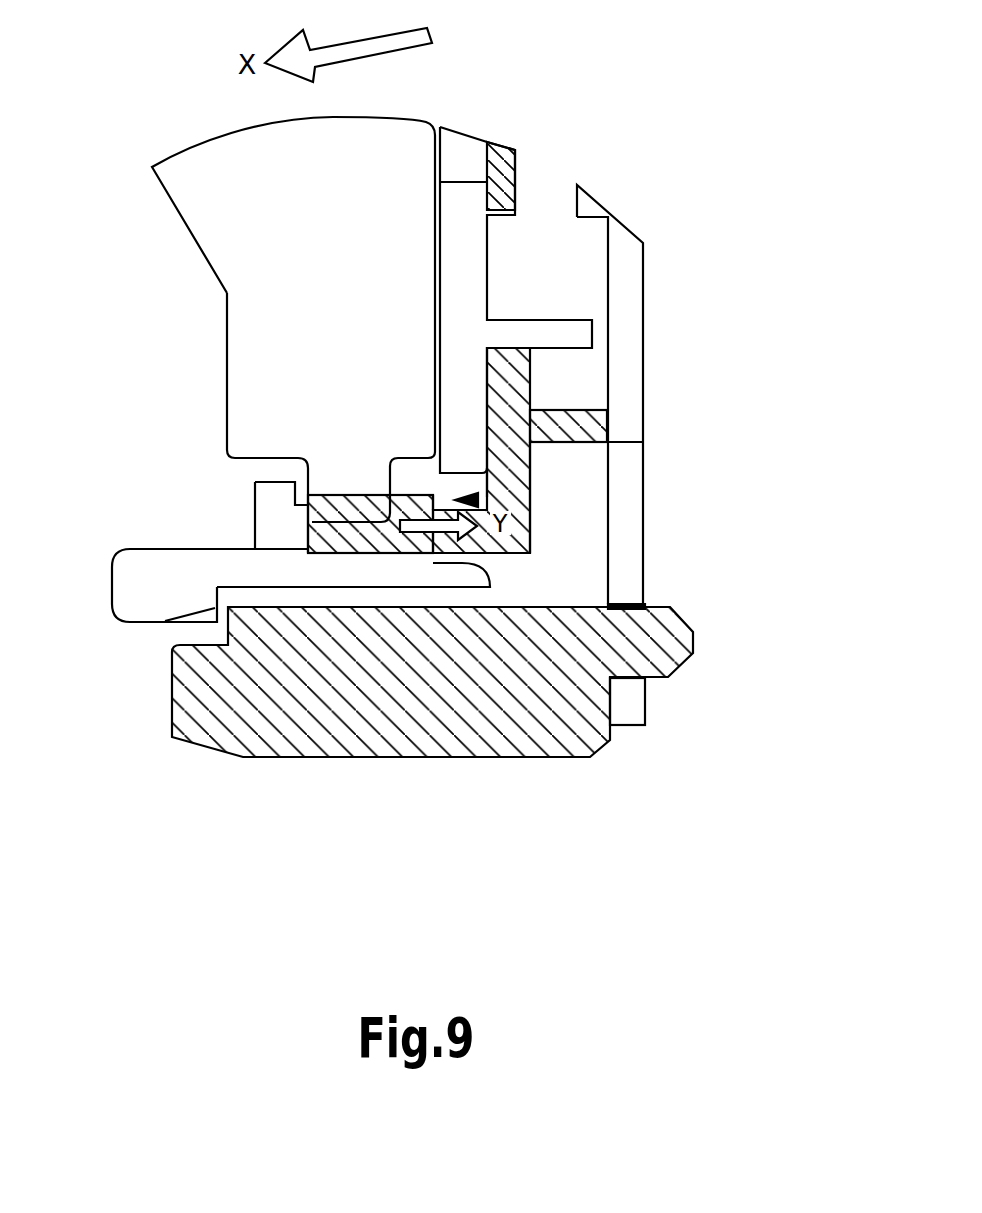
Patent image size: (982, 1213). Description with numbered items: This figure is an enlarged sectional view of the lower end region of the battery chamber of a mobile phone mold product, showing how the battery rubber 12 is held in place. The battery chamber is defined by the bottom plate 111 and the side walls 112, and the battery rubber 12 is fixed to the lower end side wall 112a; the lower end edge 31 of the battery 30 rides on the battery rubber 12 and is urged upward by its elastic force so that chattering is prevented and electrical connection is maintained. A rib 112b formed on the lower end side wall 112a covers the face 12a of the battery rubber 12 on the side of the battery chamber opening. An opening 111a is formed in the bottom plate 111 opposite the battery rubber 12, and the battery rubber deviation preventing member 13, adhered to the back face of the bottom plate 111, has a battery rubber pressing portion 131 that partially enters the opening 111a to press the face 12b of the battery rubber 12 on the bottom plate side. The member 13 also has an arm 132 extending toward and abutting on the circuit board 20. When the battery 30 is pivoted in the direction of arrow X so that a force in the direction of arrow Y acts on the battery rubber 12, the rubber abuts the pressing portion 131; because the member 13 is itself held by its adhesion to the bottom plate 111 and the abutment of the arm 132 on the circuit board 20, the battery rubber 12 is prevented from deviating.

The battery rubber 12 is at (437, 495).
The face of the battery rubber 12a is at (307, 519).
The face of the battery rubber 12b is at (446, 552).
The battery rubber deviation preventing member 13 is at (530, 537).
The circuit board 20 is at (643, 285).
The battery 30 is at (218, 210).
The lower end edge of the battery 31 is at (257, 547).
The bottom plate 111 is at (441, 229).
The opening 111a is at (478, 500).
The side walls 112 is at (455, 560).
The lower end side wall 112a is at (455, 560).
The rib 112b is at (273, 480).
The battery rubber pressing portion 131 is at (390, 492).
The arm 132 is at (590, 428).